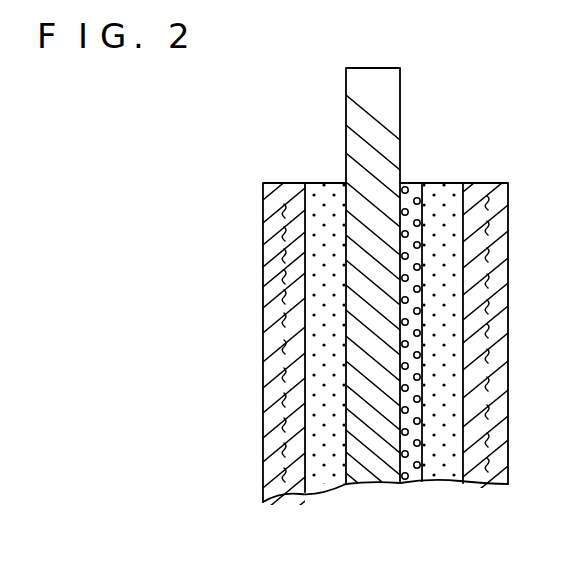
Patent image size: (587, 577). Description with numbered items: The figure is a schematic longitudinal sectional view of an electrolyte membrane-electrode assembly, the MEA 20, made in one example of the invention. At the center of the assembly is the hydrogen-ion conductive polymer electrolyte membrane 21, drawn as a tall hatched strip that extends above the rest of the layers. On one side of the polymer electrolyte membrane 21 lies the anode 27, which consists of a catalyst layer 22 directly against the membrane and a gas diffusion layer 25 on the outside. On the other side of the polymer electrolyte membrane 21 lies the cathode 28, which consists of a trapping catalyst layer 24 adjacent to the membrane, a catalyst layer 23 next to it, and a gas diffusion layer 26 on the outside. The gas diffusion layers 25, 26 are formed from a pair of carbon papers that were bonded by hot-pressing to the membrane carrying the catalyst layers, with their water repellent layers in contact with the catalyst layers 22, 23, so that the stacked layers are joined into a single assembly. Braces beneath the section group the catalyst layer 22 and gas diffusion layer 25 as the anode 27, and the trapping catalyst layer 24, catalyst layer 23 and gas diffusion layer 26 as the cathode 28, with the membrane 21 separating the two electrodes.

The MEA 20 is at (502, 138).
The hydrogen-ion conductive polymer electrolyte membrane 21 is at (378, 101).
The catalyst layer 22 is at (330, 349).
The catalyst layer 23 is at (442, 358).
The trapping catalyst layer 24 is at (405, 405).
The gas diffusion layer 25 is at (285, 251).
The gas diffusion layer 26 is at (490, 256).
The anode 27 is at (347, 508).
The cathode 28 is at (509, 506).